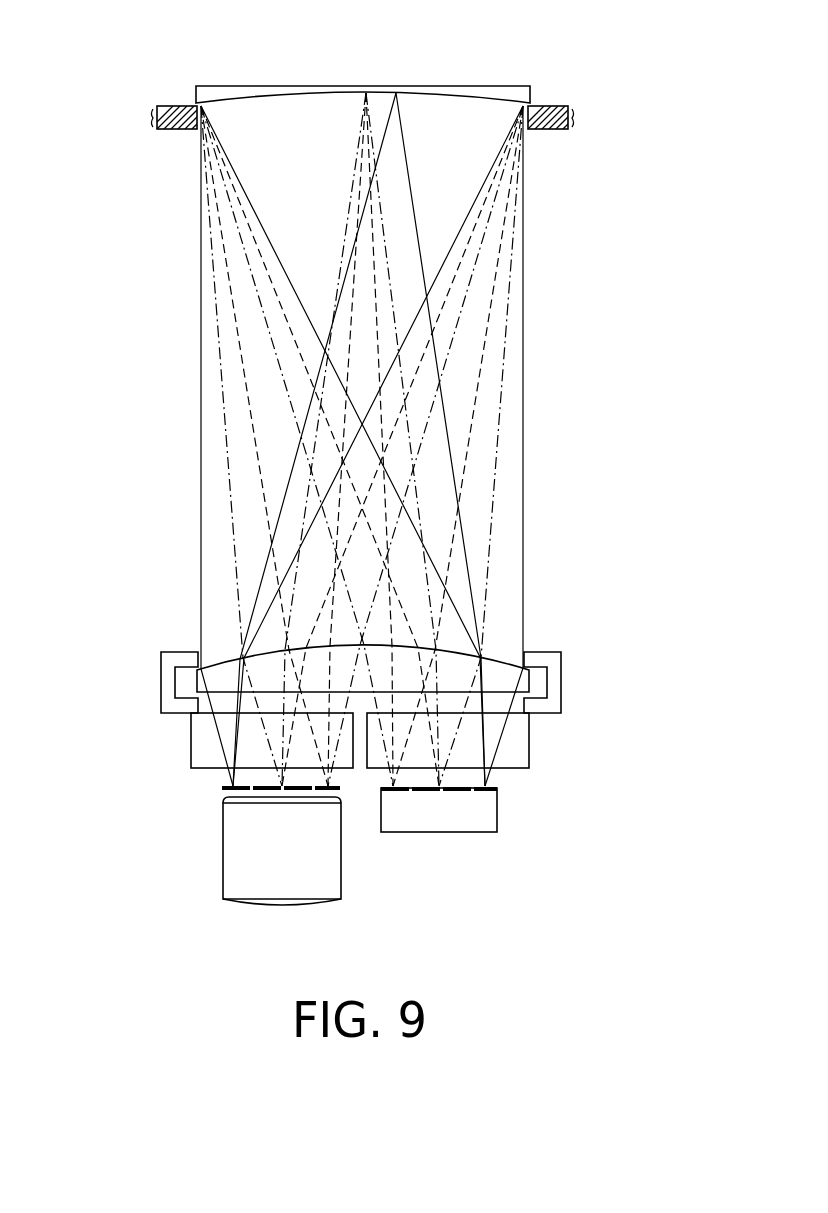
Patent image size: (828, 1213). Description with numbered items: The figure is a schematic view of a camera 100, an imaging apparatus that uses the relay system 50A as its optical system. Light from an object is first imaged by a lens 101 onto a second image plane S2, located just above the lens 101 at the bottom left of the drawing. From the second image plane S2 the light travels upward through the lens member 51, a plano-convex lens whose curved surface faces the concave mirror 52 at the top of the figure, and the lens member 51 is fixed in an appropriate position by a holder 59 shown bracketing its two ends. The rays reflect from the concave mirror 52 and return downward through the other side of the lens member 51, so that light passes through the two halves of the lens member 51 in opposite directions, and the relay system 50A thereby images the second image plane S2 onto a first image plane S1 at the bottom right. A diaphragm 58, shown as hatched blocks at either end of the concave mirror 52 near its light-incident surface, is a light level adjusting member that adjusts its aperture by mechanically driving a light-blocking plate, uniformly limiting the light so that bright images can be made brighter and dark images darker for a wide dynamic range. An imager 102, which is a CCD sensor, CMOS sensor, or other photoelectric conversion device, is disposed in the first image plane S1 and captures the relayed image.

The camera 100 is at (607, 367).
The relay system 50A is at (138, 395).
The concave mirror 52 is at (516, 101).
The diaphragm 58 is at (181, 108).
The lens member 51 is at (222, 668).
The holder 59 is at (162, 681).
The lens 101 is at (236, 860).
The imager 102 is at (440, 820).
The first image plane S1 is at (398, 783).
The second image plane S2 is at (220, 783).